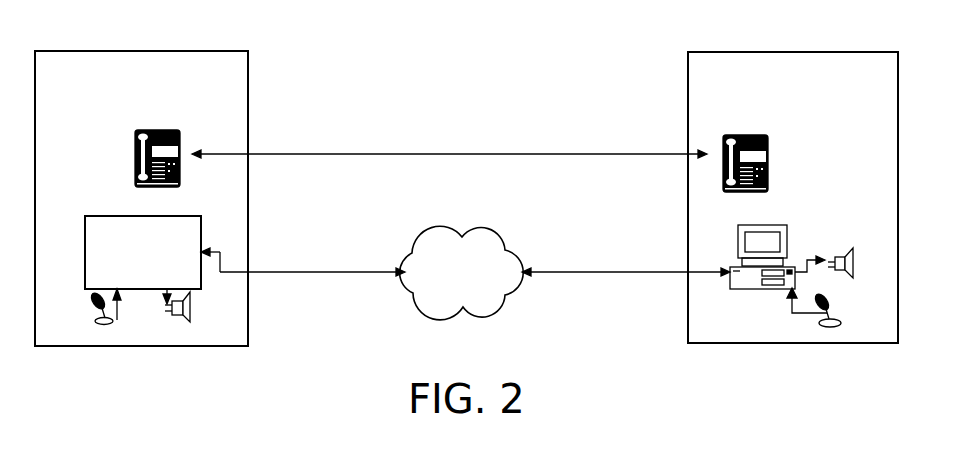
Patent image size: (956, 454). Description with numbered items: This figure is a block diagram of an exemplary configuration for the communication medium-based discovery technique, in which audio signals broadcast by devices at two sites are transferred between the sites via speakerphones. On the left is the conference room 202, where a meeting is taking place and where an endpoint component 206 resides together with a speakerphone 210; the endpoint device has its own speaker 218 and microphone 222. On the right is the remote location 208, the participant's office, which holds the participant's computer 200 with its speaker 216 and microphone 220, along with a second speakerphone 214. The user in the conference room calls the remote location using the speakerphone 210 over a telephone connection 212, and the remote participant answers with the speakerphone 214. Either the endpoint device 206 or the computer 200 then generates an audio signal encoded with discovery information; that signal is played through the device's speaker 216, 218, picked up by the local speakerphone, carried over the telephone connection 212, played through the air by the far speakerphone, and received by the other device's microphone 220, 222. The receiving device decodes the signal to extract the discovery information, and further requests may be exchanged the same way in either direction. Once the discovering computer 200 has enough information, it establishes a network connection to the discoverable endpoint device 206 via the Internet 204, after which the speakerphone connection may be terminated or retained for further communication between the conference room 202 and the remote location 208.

The computer 200 is at (763, 225).
The conference room 202 is at (242, 81).
The Internet 204 is at (497, 230).
The endpoint component 206 is at (118, 215).
The remote location 208 is at (688, 78).
The speakerphone 210 is at (161, 129).
The telephone connection 212 is at (417, 153).
The speakerphone 214 is at (740, 135).
The speaker 216 is at (846, 250).
The speaker 218 is at (190, 318).
The microphone 220 is at (834, 307).
The microphone 222 is at (96, 321).